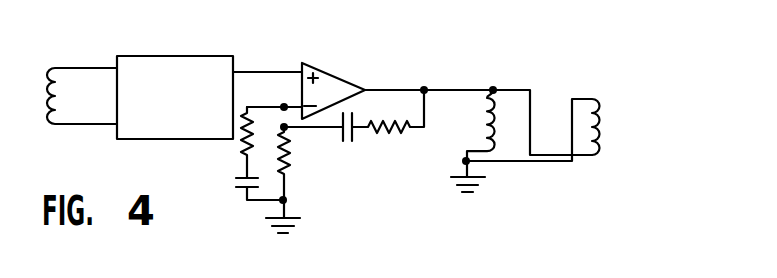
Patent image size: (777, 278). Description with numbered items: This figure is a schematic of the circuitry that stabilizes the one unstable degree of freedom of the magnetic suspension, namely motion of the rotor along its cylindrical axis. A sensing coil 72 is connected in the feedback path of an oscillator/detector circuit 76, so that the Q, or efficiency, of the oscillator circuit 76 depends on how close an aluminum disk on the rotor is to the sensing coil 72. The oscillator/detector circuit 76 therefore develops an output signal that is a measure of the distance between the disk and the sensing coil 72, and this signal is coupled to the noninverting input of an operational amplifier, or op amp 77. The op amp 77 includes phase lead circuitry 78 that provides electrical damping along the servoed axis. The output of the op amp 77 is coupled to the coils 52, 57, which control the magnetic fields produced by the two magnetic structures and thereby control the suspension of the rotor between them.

The sensing coil 72 is at (51, 80).
The oscillator/detector circuit 76 is at (189, 62).
The operational amplifier 77 is at (325, 82).
The phase lead circuitry 78 is at (361, 147).
The coil 52 is at (491, 117).
The coil 57 is at (606, 125).